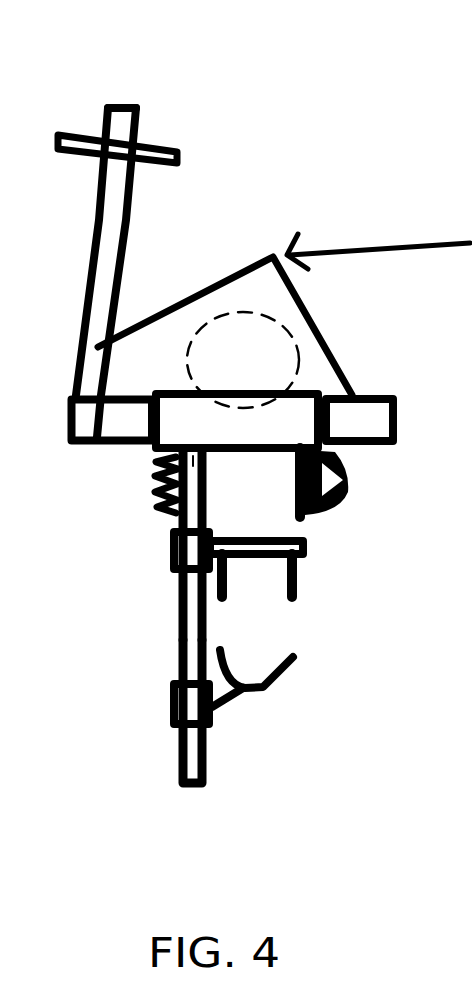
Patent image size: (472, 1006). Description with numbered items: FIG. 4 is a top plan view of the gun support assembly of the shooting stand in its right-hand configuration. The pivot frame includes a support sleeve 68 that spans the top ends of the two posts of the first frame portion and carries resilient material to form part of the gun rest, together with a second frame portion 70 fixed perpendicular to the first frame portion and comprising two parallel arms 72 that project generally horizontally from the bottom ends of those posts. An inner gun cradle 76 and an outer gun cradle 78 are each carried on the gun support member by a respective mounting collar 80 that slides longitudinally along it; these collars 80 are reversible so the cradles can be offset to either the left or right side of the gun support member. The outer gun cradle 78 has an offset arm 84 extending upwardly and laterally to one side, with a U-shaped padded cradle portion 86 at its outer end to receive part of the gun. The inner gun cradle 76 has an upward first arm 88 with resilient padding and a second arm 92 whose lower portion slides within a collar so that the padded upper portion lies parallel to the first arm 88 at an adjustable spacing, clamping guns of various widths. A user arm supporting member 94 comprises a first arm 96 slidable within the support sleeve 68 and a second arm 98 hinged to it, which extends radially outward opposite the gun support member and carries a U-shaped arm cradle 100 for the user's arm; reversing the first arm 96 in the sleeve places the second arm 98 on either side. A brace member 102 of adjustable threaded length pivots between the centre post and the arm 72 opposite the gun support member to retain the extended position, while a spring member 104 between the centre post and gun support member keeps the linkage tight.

The support sleeve 68 is at (298, 402).
The second frame portion 70 is at (314, 483).
The arms 72 is at (200, 465).
The inner gun cradle 76 is at (211, 546).
The outer gun cradle 78 is at (200, 711).
The mounting collar 80 is at (170, 568).
The offset arm 84 is at (230, 707).
The cradle portion 86 is at (280, 683).
The first arm 88 is at (227, 583).
The second arm 92 is at (290, 584).
The user arm supporting member 94 is at (116, 237).
The first arm 96 is at (113, 427).
The second arm 98 is at (88, 248).
The arm cradle 100 is at (155, 163).
The brace member 102 is at (348, 477).
The spring member 104 is at (163, 483).